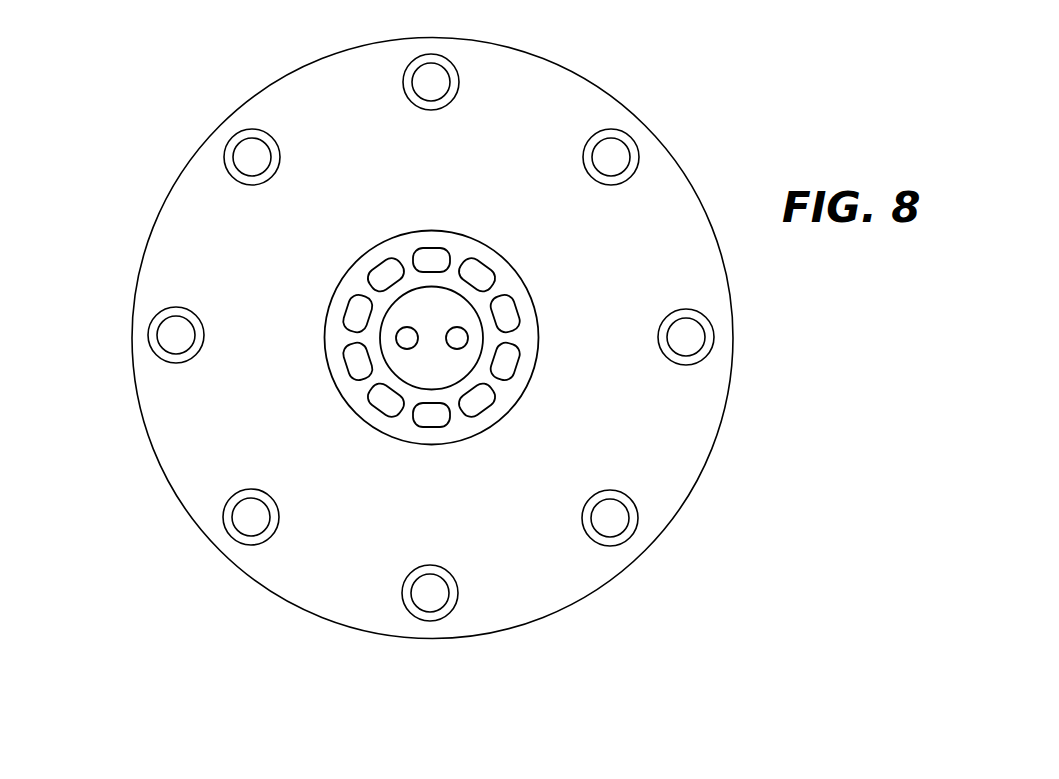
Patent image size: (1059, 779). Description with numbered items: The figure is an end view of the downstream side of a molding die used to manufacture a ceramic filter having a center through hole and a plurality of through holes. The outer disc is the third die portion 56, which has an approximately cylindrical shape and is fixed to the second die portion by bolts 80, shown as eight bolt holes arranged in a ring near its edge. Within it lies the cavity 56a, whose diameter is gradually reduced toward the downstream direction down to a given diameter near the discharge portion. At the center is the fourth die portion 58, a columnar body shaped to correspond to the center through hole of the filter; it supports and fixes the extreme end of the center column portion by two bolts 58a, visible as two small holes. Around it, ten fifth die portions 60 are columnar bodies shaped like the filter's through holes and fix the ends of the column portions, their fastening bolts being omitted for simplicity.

The third die portion 56 is at (348, 607).
The cavity 56a is at (363, 412).
The fourth die portion 58 is at (447, 308).
The bolts 58a is at (462, 338).
The fifth die portions 60 is at (478, 400).
The bolts 80 is at (633, 525).